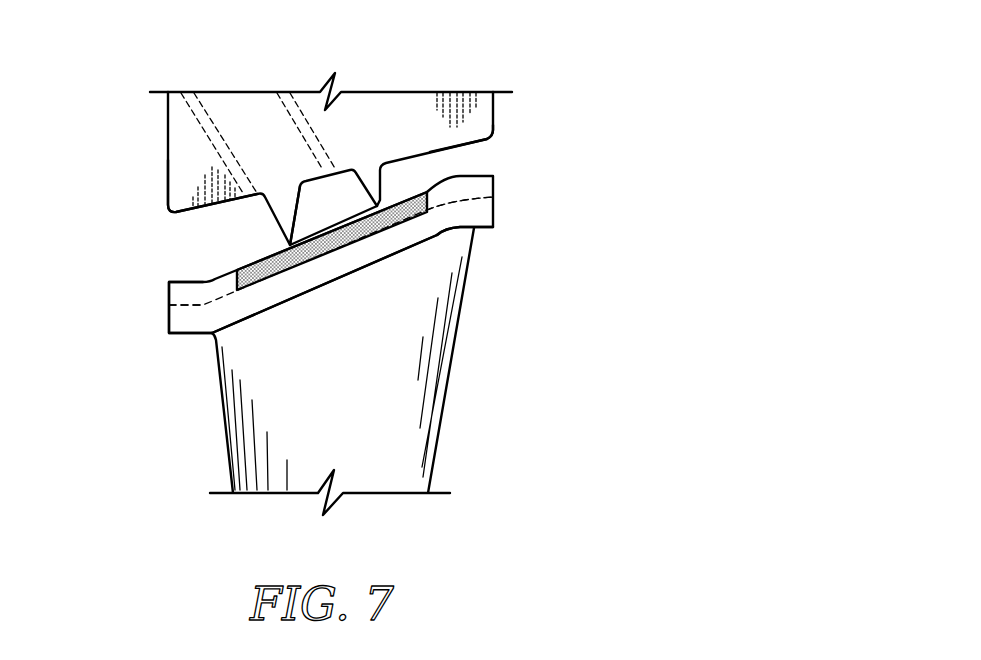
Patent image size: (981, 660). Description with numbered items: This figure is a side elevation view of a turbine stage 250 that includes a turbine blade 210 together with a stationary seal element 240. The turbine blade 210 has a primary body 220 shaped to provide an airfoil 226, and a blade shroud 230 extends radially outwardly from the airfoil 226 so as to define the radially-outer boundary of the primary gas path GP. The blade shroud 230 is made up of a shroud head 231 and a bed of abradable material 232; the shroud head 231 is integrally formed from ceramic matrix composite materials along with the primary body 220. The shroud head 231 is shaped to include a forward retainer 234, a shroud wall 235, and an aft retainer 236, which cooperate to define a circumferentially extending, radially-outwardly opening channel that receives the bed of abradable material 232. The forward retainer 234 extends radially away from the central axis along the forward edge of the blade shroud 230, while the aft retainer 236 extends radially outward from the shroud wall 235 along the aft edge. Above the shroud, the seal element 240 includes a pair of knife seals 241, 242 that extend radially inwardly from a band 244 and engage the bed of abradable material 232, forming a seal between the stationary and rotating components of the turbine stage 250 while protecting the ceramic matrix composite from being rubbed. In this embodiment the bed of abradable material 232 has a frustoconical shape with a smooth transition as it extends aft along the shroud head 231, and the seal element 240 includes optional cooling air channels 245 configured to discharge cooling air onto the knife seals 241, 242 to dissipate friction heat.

The turbine blade 210 is at (566, 352).
The primary body 220 is at (458, 400).
The airfoil 226 is at (396, 443).
The blade shroud 230 is at (497, 188).
The shroud head 231 is at (497, 218).
The bed of abradable material 232 is at (400, 201).
The forward retainer 234 is at (207, 286).
The shroud wall 235 is at (338, 270).
The aft retainer 236 is at (476, 198).
The seal element 240 is at (496, 103).
The knife seal 241 is at (268, 222).
The knife seal 242 is at (357, 199).
The band 244 is at (490, 122).
The cooling air channels 245 is at (292, 122).
The turbine stage 250 is at (695, 152).
The primary gas path GP is at (176, 395).